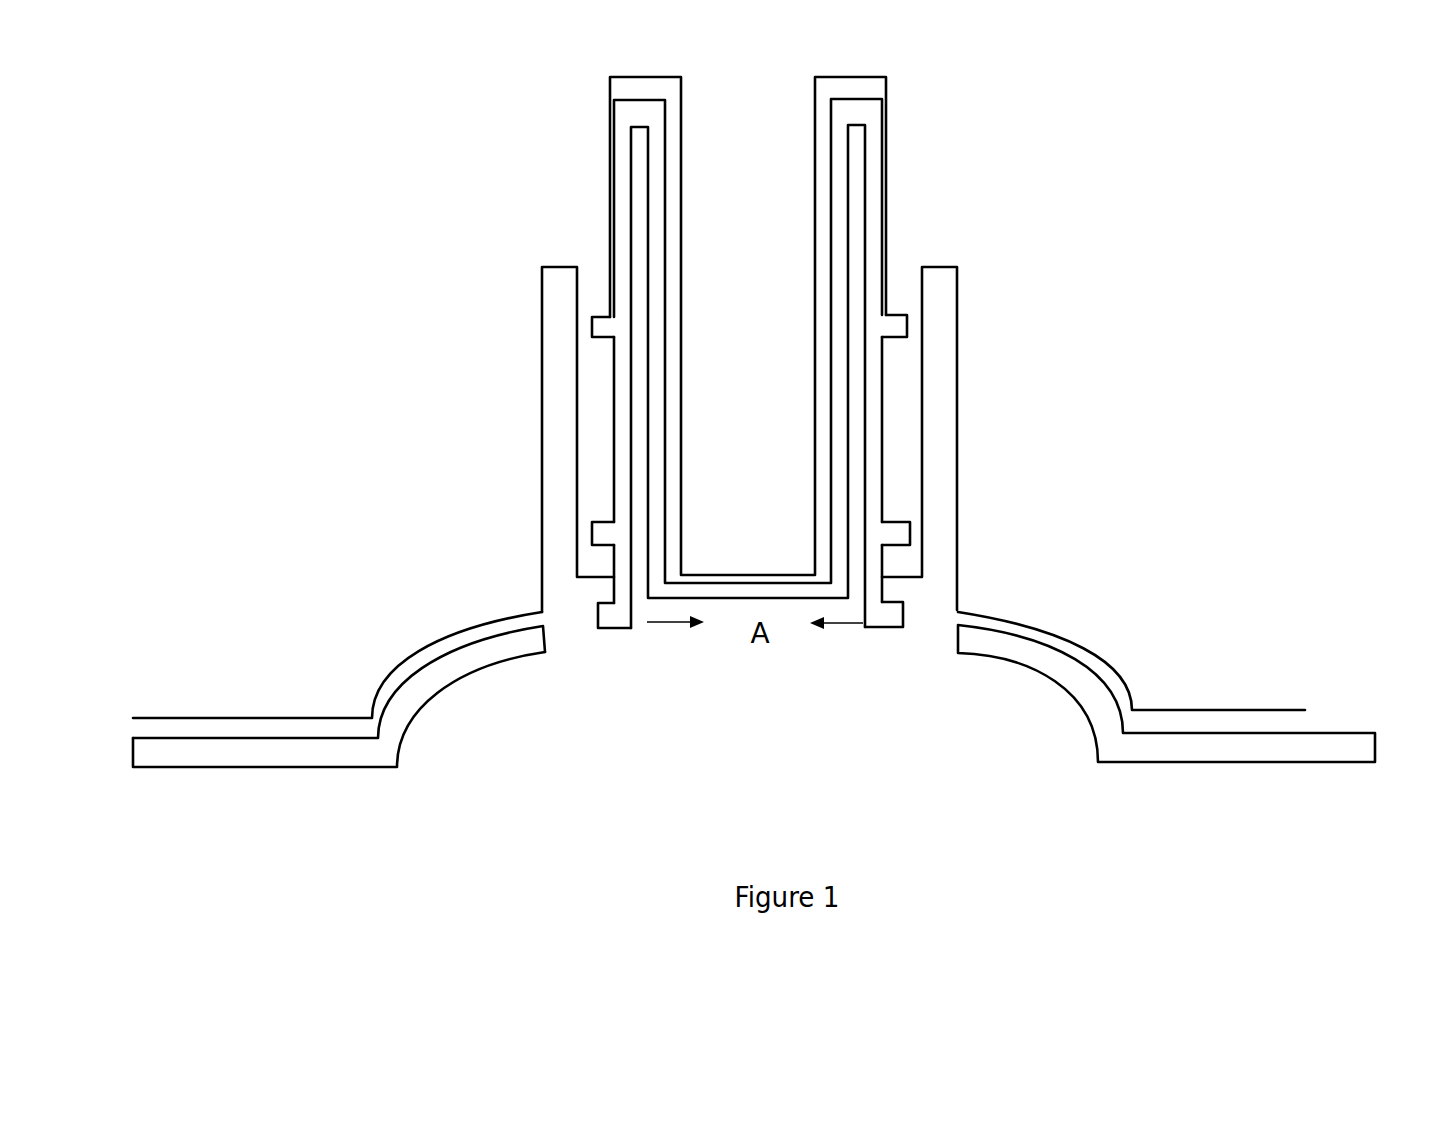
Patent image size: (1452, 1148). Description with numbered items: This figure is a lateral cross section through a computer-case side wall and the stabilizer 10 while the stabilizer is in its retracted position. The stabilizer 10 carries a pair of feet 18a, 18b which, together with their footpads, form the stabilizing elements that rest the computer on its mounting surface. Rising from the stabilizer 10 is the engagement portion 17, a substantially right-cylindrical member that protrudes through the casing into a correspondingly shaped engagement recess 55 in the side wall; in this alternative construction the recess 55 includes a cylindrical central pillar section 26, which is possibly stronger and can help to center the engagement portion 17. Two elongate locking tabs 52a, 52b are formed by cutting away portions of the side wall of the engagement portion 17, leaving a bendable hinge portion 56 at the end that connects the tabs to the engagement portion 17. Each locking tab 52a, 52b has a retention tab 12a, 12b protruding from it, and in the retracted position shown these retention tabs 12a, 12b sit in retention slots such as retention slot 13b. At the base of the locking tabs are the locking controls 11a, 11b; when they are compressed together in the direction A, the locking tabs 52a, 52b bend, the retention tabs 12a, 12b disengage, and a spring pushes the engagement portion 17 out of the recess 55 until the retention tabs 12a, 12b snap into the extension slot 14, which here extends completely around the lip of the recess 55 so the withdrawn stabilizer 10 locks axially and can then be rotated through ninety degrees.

The stabilizer 10 is at (1118, 783).
The locking control 11a is at (613, 640).
The locking control 11b is at (885, 645).
The retention tab 12a is at (610, 315).
The retention tab 12b is at (892, 310).
The retention slot 13b is at (600, 325).
The extension slot 14 is at (592, 536).
The engagement portion 17 is at (848, 277).
The foot 18a is at (218, 775).
The foot 18b is at (1345, 750).
The cylindrical central pillar section 26 is at (680, 290).
The locking tab 52a is at (627, 402).
The locking tab 52b is at (877, 456).
The engagement recess 55 is at (890, 395).
The bendable hinge portion 56 is at (622, 307).